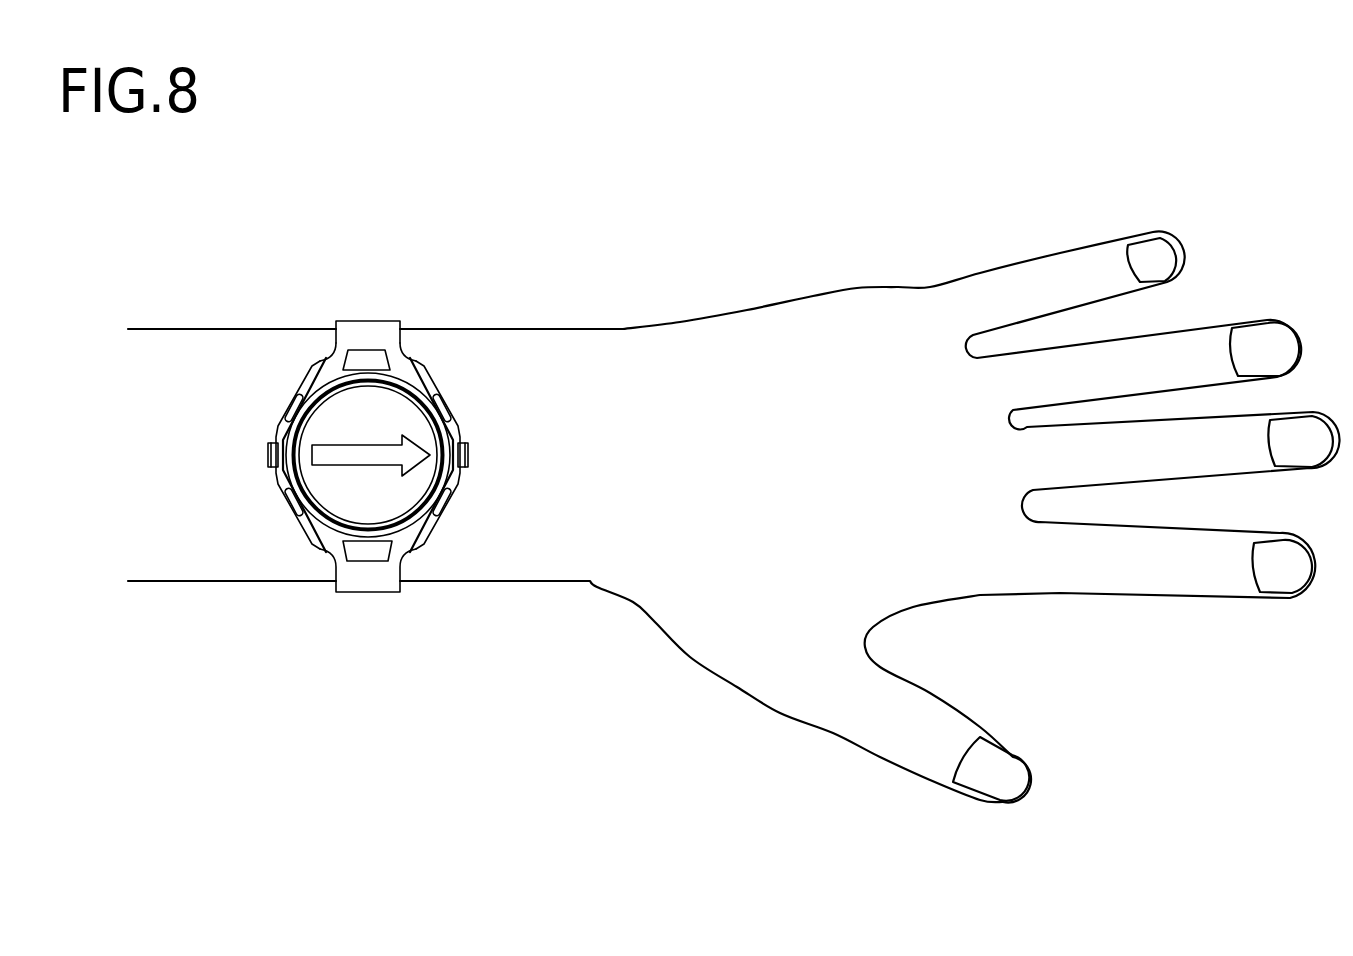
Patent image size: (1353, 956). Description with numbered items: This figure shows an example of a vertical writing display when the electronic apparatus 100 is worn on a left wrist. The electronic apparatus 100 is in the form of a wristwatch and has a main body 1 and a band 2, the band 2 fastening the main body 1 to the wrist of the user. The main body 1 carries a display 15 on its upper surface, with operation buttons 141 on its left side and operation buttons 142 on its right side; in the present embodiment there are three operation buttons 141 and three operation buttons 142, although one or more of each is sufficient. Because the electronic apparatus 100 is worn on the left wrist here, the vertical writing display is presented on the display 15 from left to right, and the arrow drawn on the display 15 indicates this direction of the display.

The electronic apparatus 100 is at (407, 312).
The main body 1 is at (238, 420).
The band 2 is at (340, 340).
The display 15 is at (323, 493).
The operation buttons 141 is at (287, 407).
The operation buttons 142 is at (450, 410).